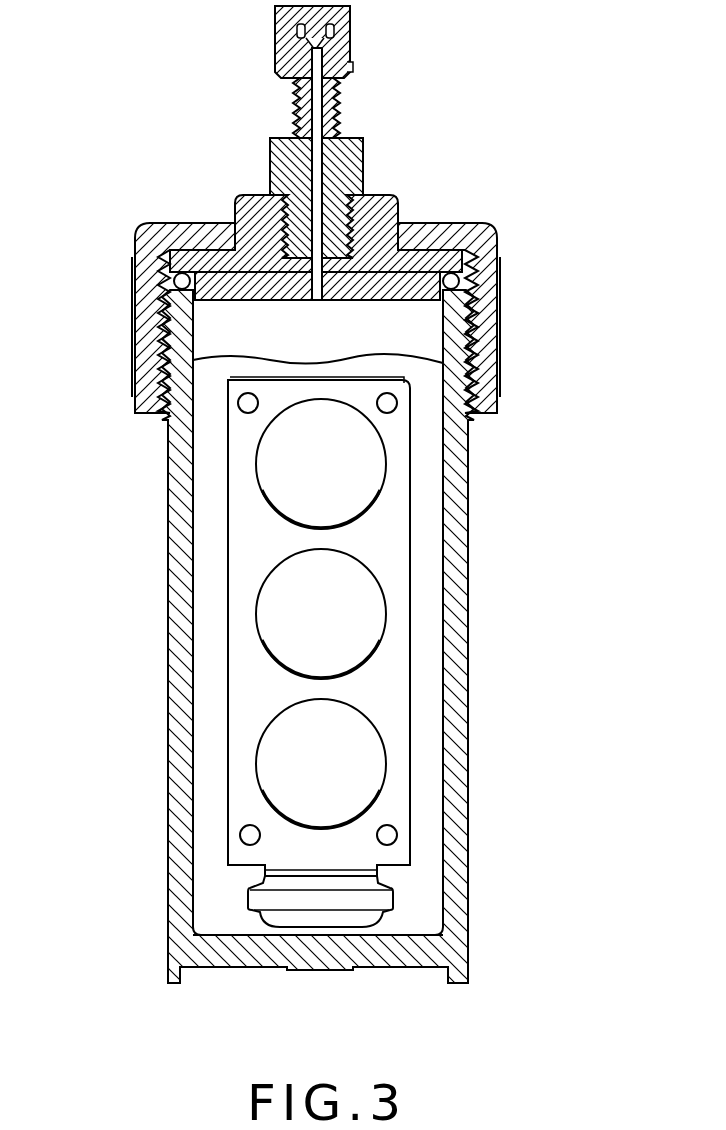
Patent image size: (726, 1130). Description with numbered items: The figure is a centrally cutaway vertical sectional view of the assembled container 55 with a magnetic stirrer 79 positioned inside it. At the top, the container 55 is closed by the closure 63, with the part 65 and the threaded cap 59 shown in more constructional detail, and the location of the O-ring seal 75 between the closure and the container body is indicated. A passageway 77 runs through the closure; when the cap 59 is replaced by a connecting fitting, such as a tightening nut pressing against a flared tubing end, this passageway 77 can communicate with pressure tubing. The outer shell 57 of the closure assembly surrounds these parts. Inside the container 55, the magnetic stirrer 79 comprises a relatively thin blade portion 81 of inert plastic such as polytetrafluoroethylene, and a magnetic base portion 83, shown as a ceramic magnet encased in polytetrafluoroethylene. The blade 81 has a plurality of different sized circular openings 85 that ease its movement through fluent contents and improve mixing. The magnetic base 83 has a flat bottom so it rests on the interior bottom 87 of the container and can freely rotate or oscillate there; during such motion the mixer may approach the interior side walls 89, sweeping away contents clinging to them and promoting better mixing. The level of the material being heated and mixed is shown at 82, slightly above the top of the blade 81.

The container 55 is at (474, 615).
The threaded cap 57 is at (135, 231).
The cap 59 is at (350, 36).
The closure 63 is at (233, 200).
The part 65 is at (363, 155).
The O-ring seal 75 is at (462, 282).
The passageway 77 is at (317, 302).
The magnetic stirrer 79 is at (416, 656).
The blade portion 81 is at (410, 460).
The level of the material 82 is at (246, 358).
The magnetic base portion 83 is at (393, 892).
The circular openings 85 is at (386, 770).
The interior bottom 87 is at (417, 936).
The interior side walls 89 is at (434, 590).